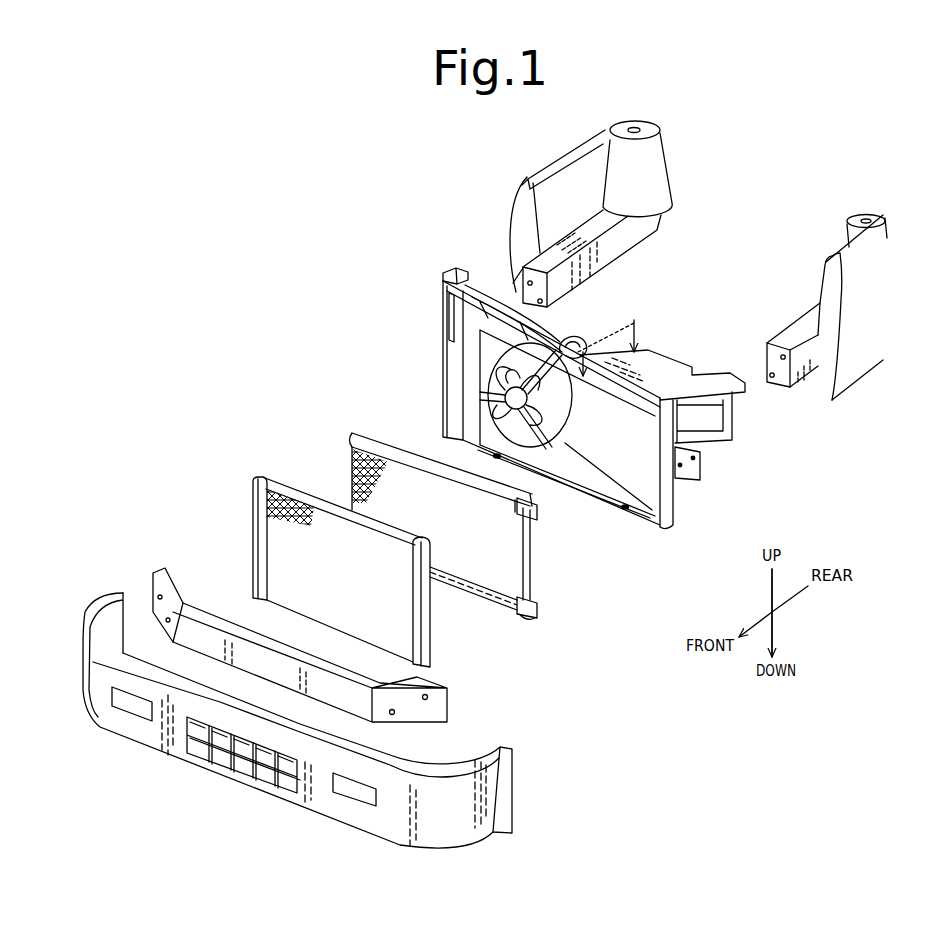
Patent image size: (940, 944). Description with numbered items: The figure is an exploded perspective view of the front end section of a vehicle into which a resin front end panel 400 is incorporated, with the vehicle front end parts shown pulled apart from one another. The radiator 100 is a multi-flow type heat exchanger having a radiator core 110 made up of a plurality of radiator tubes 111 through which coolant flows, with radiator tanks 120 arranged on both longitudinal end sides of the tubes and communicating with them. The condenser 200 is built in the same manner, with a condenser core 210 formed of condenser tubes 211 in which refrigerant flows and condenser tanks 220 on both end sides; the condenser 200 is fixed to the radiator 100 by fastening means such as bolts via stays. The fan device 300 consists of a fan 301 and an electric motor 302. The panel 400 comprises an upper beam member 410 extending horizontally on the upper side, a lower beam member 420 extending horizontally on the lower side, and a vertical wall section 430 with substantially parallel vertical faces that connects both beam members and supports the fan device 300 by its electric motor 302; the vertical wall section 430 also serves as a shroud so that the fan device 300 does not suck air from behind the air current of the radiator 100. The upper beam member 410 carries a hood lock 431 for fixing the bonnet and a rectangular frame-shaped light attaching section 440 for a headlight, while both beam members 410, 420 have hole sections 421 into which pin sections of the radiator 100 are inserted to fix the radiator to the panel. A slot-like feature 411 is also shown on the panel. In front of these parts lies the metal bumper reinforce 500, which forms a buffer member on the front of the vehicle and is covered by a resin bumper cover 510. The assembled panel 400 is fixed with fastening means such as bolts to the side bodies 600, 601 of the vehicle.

The radiator 100 is at (349, 437).
The radiator core 110 is at (410, 490).
The radiator tubes 111 is at (362, 472).
The radiator tanks 120 is at (528, 514).
The condenser 200 is at (306, 491).
The condenser core 210 is at (296, 557).
The condenser tubes 211 is at (264, 502).
The condenser tanks 220 is at (253, 536).
The fan device 300 is at (444, 331).
The fan 301 is at (492, 345).
The electric motor 302 is at (530, 330).
The front end panel 400 is at (455, 292).
The upper beam member 410 is at (467, 275).
The side bracket slot 411 is at (452, 340).
The lower beam member 420 is at (641, 521).
The hole sections 421 is at (501, 458).
The vertical wall section 430 is at (597, 480).
The hood lock 431 is at (620, 322).
The light attaching section 440 is at (450, 309).
The bumper reinforce 500 is at (185, 601).
The bumper cover 510 is at (496, 787).
The side body 600 is at (520, 292).
The side body 601 is at (527, 179).